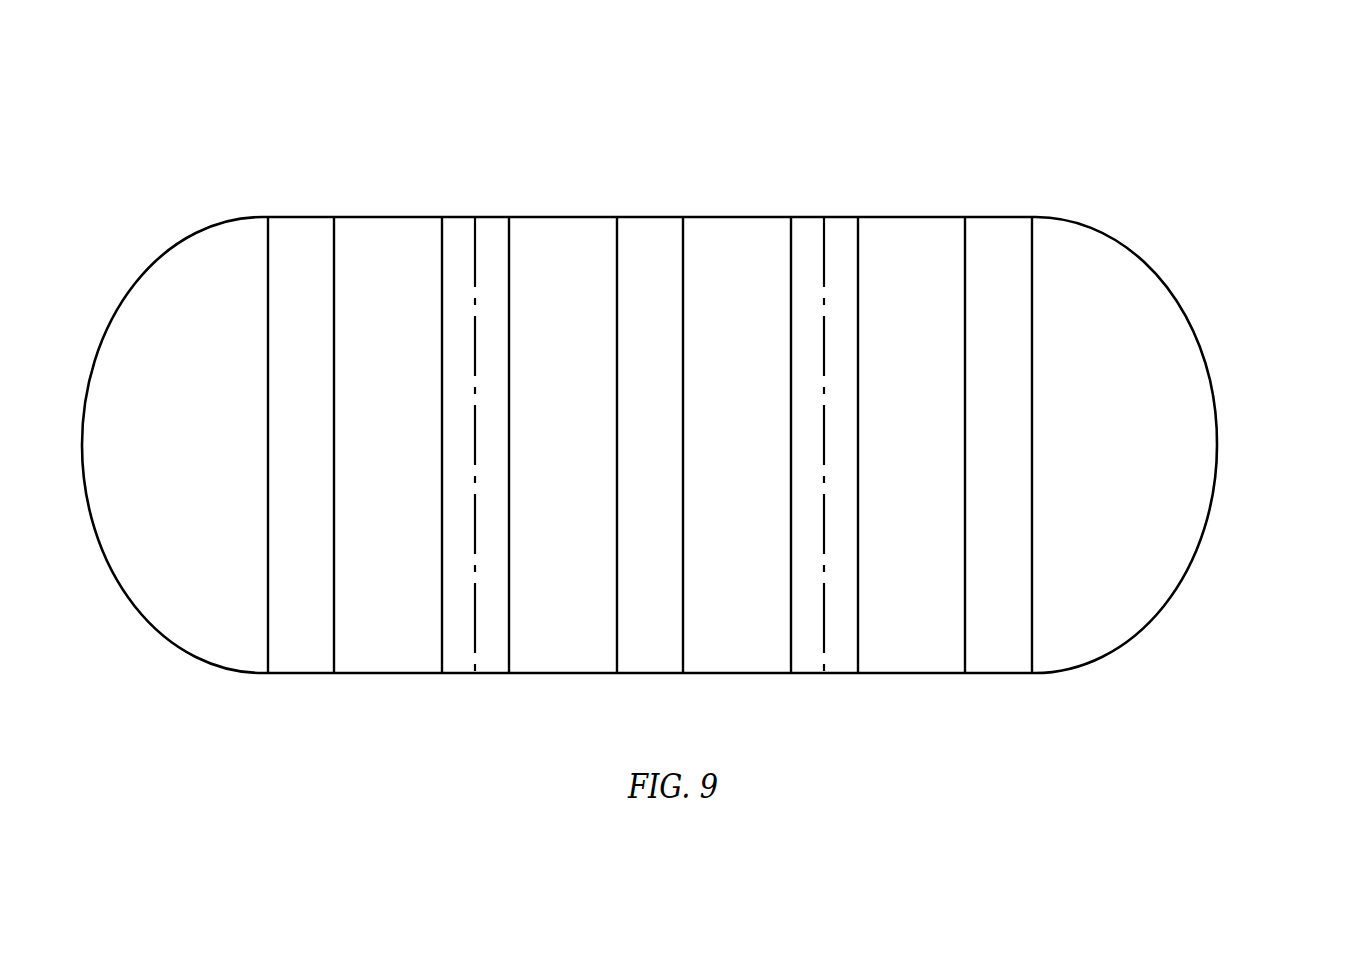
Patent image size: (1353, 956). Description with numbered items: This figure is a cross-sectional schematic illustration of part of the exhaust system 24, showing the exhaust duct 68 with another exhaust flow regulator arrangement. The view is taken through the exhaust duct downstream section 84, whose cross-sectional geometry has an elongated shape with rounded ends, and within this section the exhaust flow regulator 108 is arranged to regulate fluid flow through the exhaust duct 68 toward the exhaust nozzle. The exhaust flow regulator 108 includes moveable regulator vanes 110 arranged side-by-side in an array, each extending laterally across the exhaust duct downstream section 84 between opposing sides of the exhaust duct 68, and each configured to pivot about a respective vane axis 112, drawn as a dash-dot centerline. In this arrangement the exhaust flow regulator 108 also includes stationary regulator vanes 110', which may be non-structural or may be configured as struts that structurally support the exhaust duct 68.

The exhaust system 24 is at (637, 370).
The exhaust flow regulator 108 is at (1090, 281).
The exhaust duct 68 is at (1228, 404).
The exhaust duct downstream section 84 is at (1189, 571).
The regulator vanes 110 is at (689, 445).
The stationary regulator vanes 110' is at (694, 445).
The vane axis 112 is at (475, 643).